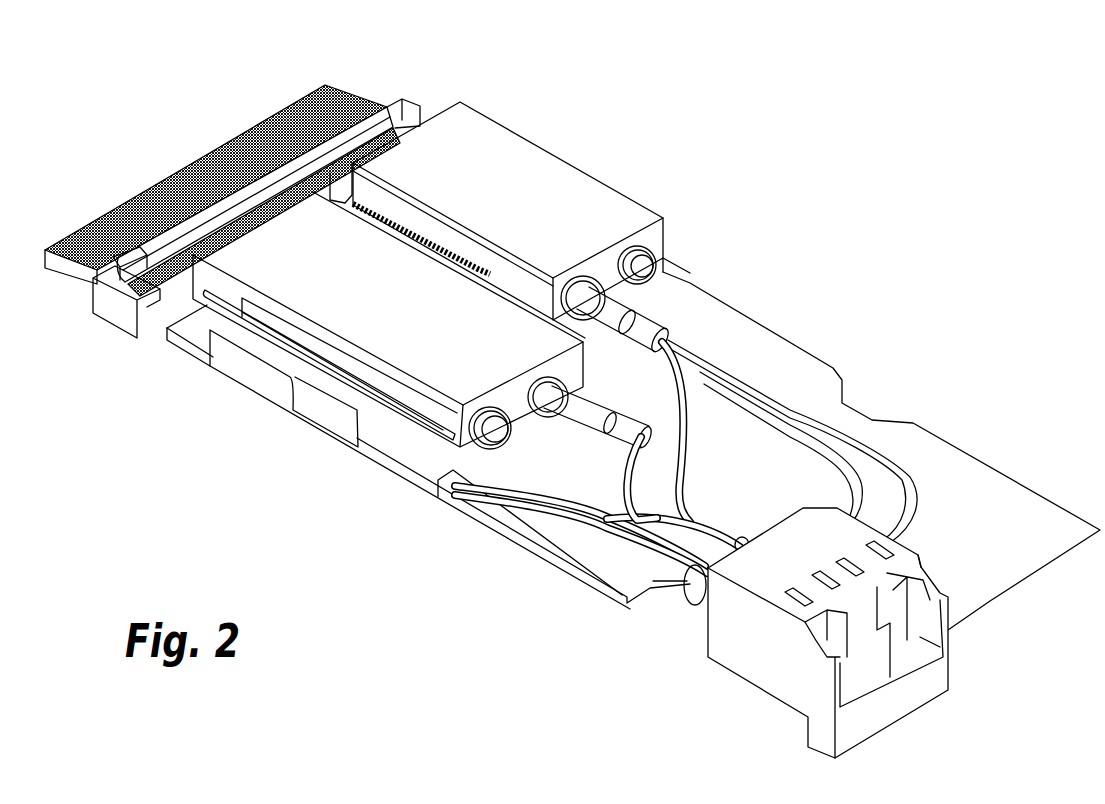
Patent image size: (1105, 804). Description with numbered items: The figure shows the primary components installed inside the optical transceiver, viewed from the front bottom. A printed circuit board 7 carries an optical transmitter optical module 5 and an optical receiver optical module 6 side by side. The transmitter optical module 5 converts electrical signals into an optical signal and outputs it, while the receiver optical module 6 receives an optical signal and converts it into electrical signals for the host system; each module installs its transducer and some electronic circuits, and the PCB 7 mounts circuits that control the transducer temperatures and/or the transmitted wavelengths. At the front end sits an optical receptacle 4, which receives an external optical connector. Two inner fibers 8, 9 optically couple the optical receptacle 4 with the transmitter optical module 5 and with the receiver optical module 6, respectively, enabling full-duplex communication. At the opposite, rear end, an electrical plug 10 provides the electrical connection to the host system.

The optical receptacle 4 is at (878, 718).
The optical transmitter optical module 5 is at (373, 342).
The optical receiver optical module 6 is at (573, 178).
The printed circuit board 7 is at (812, 366).
The inner fiber 8 is at (683, 487).
The inner fiber 9 is at (685, 405).
The electrical plug 10 is at (401, 102).